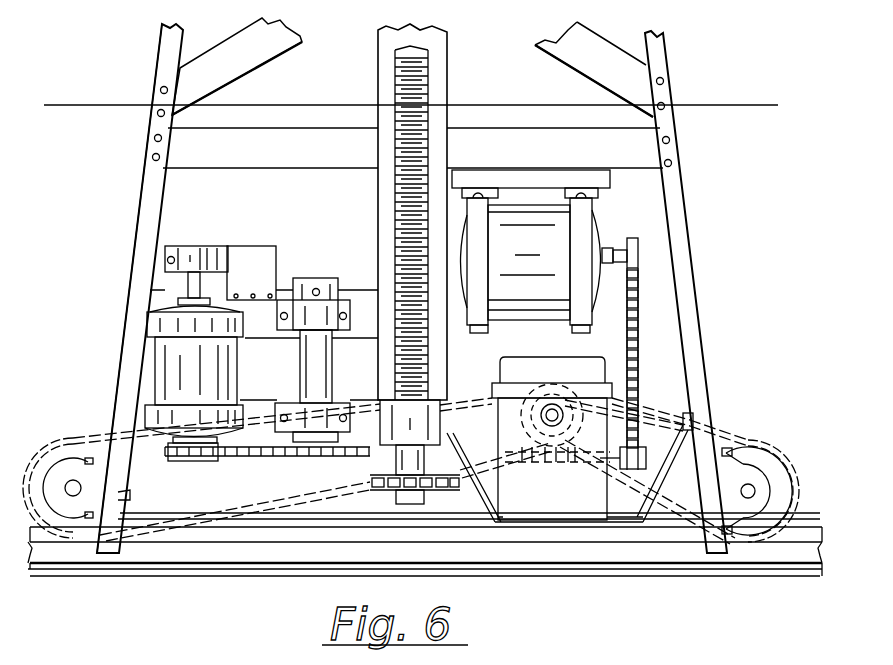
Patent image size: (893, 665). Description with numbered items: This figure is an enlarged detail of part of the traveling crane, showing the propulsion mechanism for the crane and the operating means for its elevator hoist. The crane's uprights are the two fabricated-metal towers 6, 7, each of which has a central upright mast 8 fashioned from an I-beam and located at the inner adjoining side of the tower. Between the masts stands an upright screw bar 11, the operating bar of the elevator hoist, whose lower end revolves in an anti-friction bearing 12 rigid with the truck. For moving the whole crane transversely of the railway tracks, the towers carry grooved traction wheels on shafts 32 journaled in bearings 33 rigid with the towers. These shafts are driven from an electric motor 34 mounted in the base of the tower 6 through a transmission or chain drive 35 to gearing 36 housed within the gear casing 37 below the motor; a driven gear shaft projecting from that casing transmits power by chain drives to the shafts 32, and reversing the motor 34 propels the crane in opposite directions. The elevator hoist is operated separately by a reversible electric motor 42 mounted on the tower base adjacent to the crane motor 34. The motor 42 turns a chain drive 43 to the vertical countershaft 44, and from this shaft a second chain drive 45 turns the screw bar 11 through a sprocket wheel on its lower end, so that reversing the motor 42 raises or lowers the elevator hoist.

The tower 6 is at (162, 53).
The tower 7 is at (65, 75).
The mast 8 is at (438, 212).
The screw bar 11 is at (428, 85).
The bearing 12 is at (418, 432).
The shaft 32 is at (70, 494).
The bearing 33 is at (754, 508).
The electric motor 34 is at (539, 251).
The chain drive 35 is at (637, 372).
The gearing 36 is at (551, 430).
The gear casing 37 is at (580, 503).
The reversible electric motor 42 is at (172, 353).
The chain drive 43 is at (252, 458).
The vertical countershaft 44 is at (313, 381).
The chain drive 45 is at (347, 500).